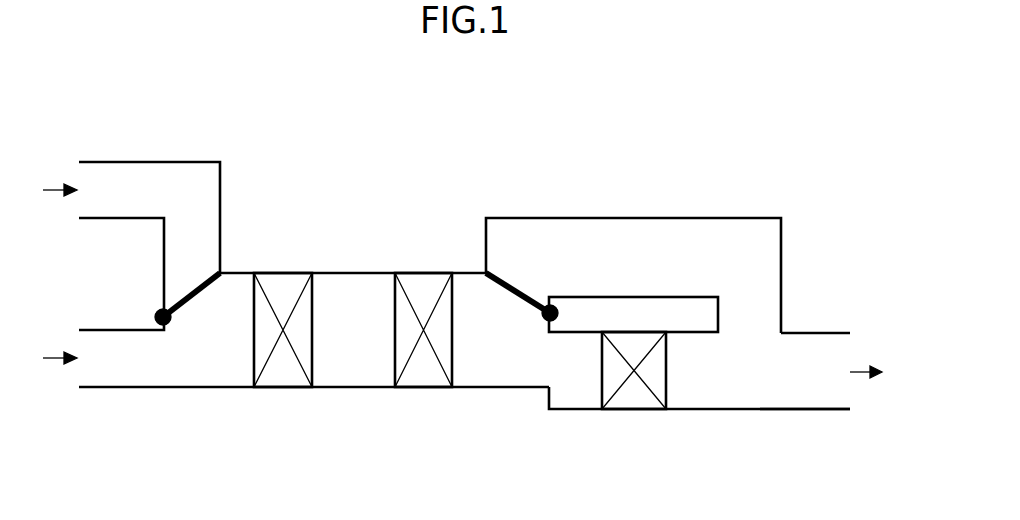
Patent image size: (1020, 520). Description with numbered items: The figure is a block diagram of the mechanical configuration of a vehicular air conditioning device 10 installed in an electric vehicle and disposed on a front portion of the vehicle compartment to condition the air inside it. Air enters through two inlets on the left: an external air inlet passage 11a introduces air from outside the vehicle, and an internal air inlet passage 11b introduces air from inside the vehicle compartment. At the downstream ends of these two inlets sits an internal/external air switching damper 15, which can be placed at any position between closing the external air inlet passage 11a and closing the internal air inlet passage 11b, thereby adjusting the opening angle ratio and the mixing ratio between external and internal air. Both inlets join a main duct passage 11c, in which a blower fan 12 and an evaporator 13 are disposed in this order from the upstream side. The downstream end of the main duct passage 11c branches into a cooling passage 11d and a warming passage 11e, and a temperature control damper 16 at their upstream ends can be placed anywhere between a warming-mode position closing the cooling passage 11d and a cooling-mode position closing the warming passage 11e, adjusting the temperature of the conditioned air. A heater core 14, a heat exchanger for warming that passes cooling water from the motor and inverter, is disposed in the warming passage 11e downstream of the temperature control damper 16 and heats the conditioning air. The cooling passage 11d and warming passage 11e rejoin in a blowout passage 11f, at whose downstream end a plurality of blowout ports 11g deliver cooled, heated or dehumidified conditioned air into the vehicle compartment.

The air conditioning device 10 is at (538, 147).
The external air inlet passage 11a is at (110, 160).
The internal air inlet passage 11b is at (110, 329).
The main duct passage 11c is at (357, 390).
The cooling passage 11d is at (635, 217).
The warming passage 11e is at (702, 412).
The blowout passage 11f is at (815, 330).
The blowout ports 11g is at (842, 412).
The blower fan 12 is at (283, 272).
The evaporator 13 is at (425, 272).
The heater core 14 is at (633, 412).
The internal/external air switching damper 15 is at (197, 287).
The temperature control damper 16 is at (515, 287).